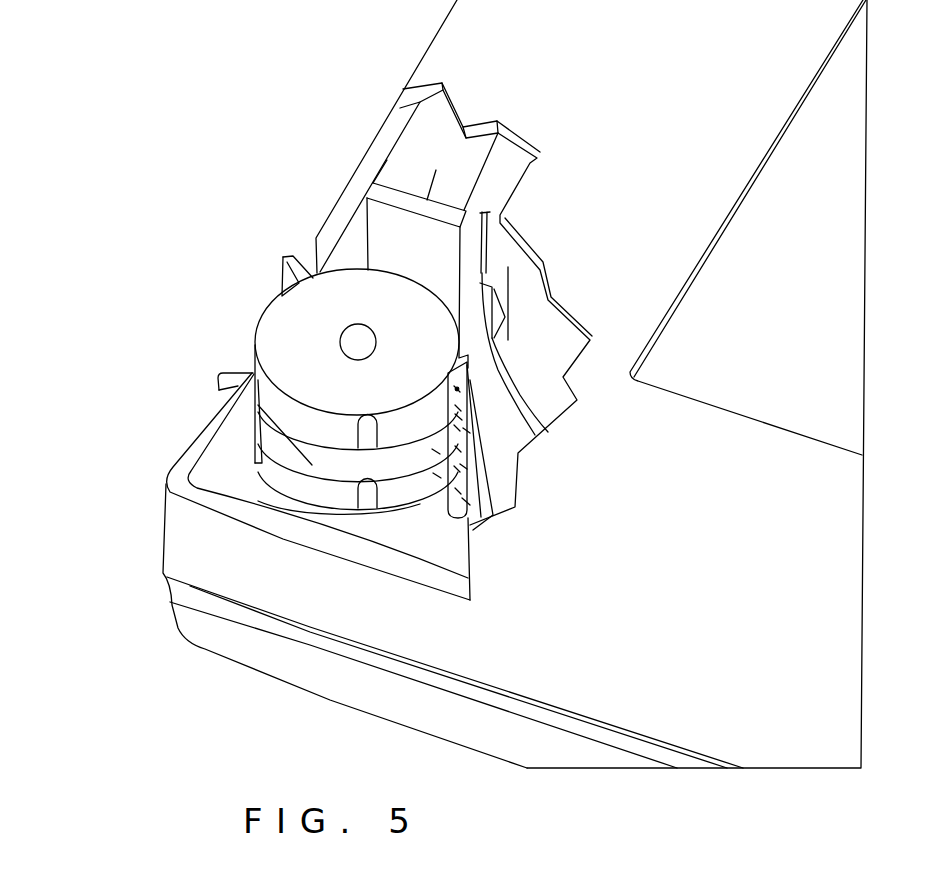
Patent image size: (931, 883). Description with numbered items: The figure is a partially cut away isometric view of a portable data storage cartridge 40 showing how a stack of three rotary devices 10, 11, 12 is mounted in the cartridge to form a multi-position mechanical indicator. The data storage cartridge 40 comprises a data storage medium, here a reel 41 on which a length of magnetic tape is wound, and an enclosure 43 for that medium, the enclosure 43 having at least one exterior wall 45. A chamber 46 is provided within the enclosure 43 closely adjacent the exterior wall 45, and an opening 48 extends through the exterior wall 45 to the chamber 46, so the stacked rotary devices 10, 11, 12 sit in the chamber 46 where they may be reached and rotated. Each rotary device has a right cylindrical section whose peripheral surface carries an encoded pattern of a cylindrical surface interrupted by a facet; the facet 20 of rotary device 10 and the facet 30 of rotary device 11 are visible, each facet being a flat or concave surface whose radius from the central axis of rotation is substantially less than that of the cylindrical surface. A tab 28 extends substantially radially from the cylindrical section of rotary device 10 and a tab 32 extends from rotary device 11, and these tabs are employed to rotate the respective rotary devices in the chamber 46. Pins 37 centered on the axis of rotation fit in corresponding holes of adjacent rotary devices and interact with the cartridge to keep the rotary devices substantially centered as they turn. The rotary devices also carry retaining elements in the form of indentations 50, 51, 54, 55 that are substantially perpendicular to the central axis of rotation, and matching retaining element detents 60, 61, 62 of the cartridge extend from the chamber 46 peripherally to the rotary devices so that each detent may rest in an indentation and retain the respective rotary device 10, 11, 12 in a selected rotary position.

The rotary device 10 is at (461, 430).
The rotary device 11 is at (463, 462).
The rotary device 12 is at (473, 498).
The facet 20 is at (277, 315).
The tab 28 is at (285, 257).
The facet 30 is at (291, 438).
The tab 32 is at (237, 373).
The pin 37 is at (353, 325).
The data storage cartridge 40 is at (275, 121).
The reel 41 is at (505, 272).
The enclosure 43 is at (163, 557).
The exterior wall 45 is at (187, 445).
The chamber 46 is at (243, 443).
The opening 48 is at (247, 372).
The indentation 50 is at (447, 373).
The indentation 51 is at (431, 412).
The indentation 54 is at (428, 447).
The indentation 55 is at (372, 484).
The detent 60 is at (459, 390).
The detent 61 is at (456, 417).
The detent 62 is at (433, 473).